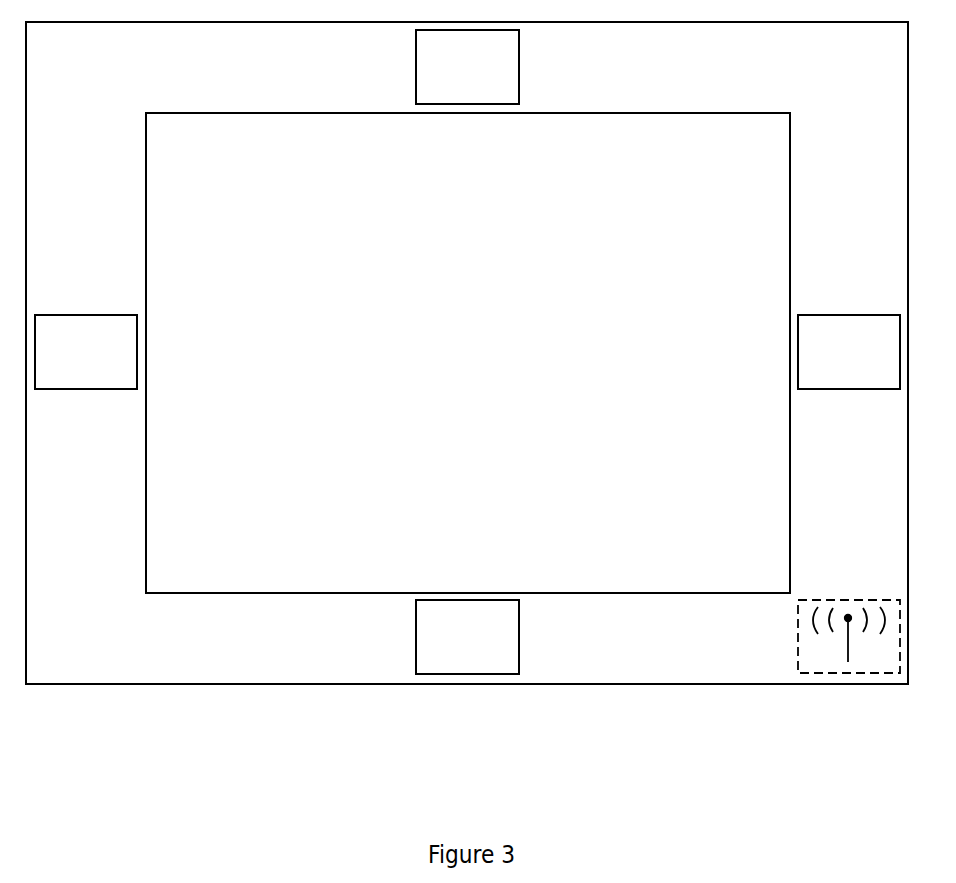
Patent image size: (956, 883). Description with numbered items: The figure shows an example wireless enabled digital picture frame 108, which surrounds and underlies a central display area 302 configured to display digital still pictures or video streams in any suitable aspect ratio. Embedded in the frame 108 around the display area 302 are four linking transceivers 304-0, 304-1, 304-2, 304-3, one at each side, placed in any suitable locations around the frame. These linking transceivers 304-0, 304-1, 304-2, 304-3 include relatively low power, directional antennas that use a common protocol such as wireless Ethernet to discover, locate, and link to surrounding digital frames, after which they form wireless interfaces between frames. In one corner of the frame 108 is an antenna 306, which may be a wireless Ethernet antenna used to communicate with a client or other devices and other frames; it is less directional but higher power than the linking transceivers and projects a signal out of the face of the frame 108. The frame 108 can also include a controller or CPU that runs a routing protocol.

The wireless enabled digital picture frame 108 is at (101, 92).
The display area 302 is at (488, 377).
The linking transceiver 304-0 is at (498, 93).
The linking transceiver 304-1 is at (880, 378).
The linking transceiver 304-2 is at (498, 661).
The linking transceiver 304-3 is at (118, 378).
The antenna 306 is at (872, 655).